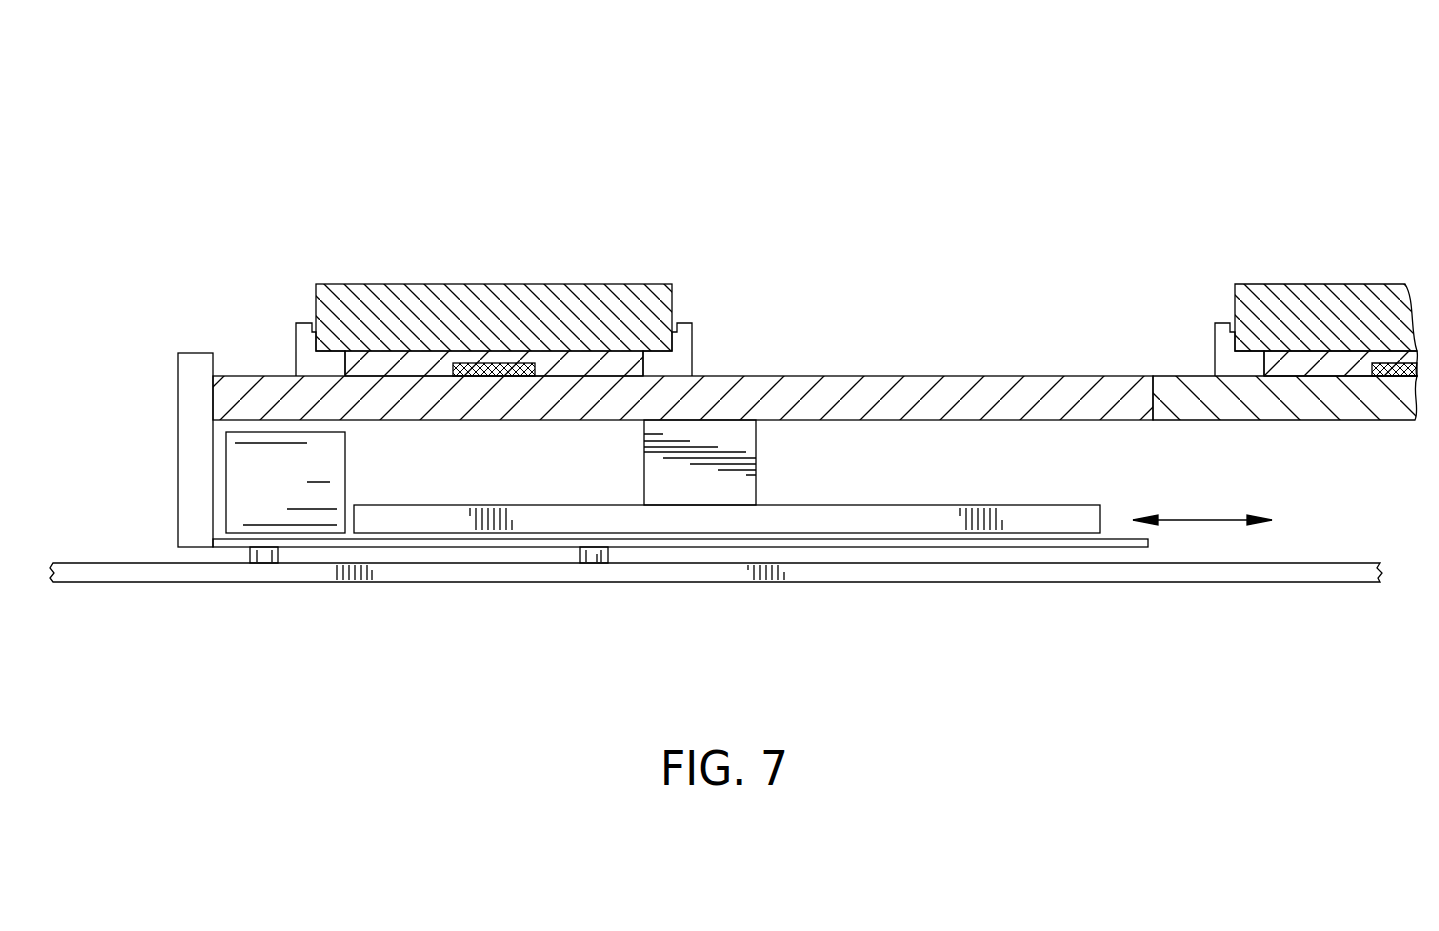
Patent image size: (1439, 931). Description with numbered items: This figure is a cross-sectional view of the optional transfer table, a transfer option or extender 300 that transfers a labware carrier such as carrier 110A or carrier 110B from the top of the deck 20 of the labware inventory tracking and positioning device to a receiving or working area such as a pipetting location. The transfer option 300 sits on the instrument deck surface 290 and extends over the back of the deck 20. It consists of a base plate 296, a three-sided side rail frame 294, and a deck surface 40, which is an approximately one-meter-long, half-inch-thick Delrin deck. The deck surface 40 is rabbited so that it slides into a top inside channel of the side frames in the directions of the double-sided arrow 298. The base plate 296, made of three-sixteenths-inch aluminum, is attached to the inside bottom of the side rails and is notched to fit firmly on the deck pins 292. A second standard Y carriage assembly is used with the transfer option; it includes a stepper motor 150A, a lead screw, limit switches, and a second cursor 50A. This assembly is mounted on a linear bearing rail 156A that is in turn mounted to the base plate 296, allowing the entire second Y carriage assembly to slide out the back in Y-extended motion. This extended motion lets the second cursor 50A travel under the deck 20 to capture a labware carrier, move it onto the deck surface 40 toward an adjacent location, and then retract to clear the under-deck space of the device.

The transfer option 300 is at (1000, 168).
The deck 20 is at (1325, 402).
The deck surface 40 is at (1015, 397).
The second cursor 50A is at (732, 433).
The carrier 110A is at (1215, 342).
The carrier 110B is at (295, 341).
The stepper motor 150A is at (247, 485).
The linear bearing rail 156A is at (417, 521).
The instrument deck surface 290 is at (87, 572).
The deck pins 292 is at (262, 558).
The side rail frame 294 is at (193, 391).
The base plate 296 is at (1075, 540).
The double-sided arrow 298 is at (1215, 520).